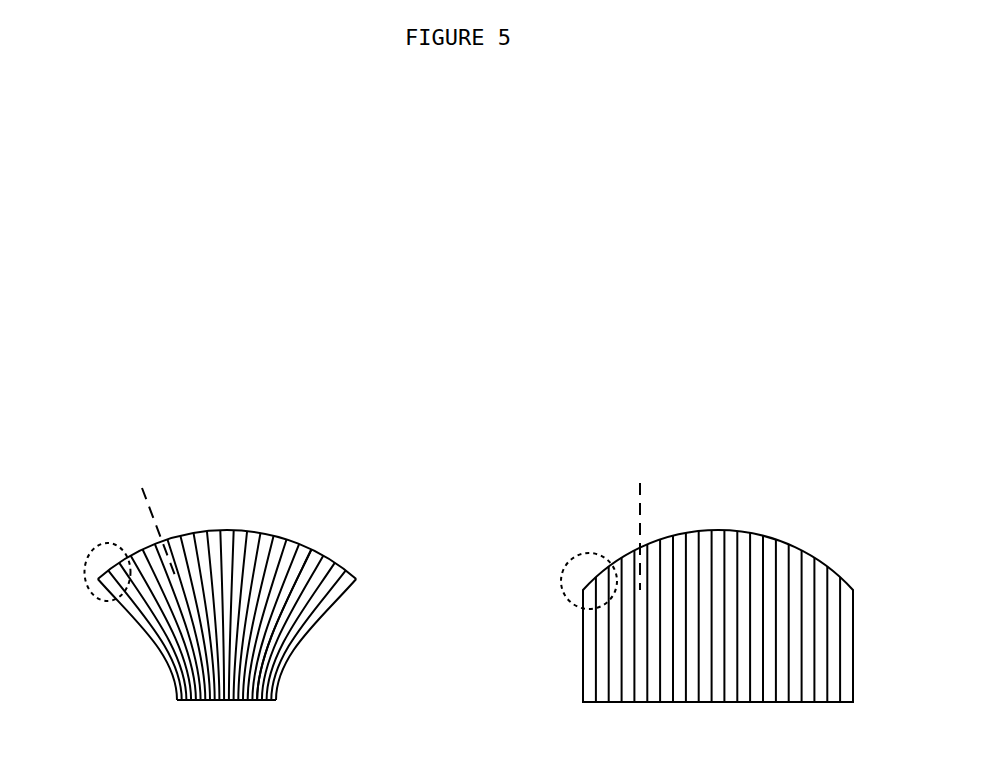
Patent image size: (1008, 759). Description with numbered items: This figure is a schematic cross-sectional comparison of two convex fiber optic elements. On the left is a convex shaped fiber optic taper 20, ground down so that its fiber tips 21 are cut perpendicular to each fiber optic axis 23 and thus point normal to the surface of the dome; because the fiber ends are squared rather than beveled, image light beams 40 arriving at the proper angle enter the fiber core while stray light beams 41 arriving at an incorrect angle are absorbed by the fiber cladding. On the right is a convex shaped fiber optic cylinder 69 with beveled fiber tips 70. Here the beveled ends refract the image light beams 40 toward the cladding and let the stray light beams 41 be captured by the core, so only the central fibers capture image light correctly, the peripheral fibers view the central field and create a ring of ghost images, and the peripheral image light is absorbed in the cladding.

The fan-shaped blade/fin assembly 20 is at (218, 410).
The fiber tips 21 is at (110, 545).
The fiber optic axis 23 is at (142, 488).
The image light beams 40 is at (309, 568).
The stray light beams 41 is at (300, 553).
The convex shaped fiber optic cylinder 69 is at (733, 410).
The beveled fiber tips 70 is at (587, 555).